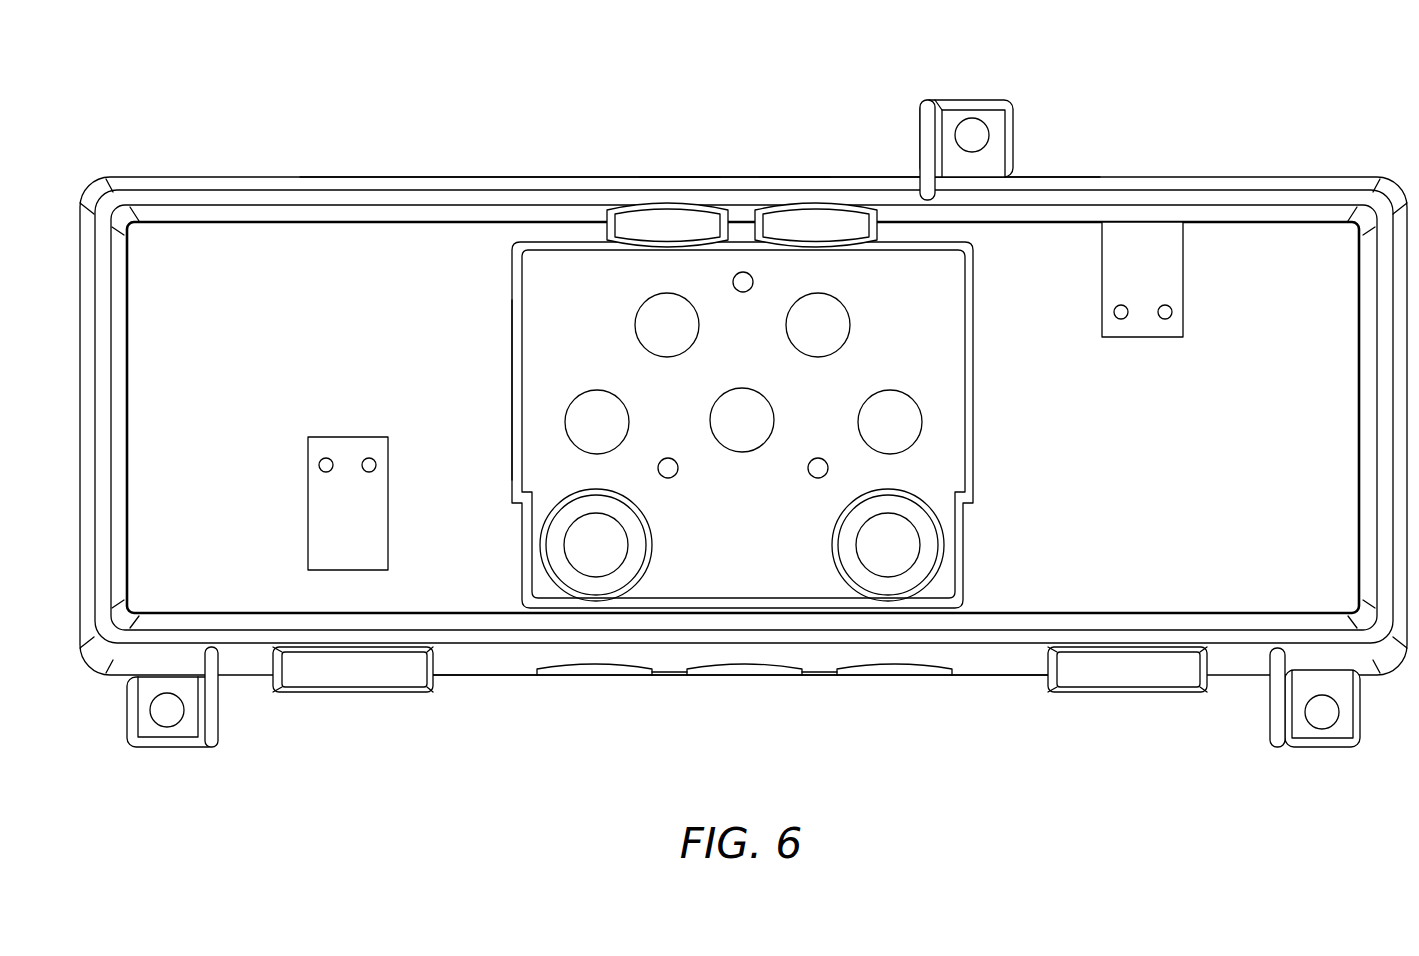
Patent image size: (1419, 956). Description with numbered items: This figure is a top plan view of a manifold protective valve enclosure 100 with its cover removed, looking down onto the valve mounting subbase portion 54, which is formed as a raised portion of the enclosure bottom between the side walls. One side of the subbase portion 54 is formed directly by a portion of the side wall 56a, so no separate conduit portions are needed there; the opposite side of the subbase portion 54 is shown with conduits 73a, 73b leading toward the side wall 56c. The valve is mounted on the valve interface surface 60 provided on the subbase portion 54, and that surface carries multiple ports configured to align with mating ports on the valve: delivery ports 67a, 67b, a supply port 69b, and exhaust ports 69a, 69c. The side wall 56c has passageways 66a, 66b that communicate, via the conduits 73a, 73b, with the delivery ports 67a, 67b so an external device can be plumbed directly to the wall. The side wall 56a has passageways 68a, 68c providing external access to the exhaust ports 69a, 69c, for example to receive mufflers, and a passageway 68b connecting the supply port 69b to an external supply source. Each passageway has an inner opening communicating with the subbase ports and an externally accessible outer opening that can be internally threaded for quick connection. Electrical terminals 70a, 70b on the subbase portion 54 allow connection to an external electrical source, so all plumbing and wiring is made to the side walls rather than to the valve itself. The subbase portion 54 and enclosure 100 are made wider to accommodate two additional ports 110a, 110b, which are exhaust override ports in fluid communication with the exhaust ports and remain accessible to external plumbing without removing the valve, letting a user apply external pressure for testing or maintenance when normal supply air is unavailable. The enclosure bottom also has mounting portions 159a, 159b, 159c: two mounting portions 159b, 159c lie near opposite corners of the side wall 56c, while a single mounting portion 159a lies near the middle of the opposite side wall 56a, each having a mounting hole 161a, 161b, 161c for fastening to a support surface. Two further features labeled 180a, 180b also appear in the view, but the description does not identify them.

The manifold protective valve enclosure 100 is at (748, 77).
The valve mounting subbase portion 54 is at (980, 455).
The side wall 56a is at (482, 676).
The side wall 56c is at (1245, 177).
The valve interface surface 60 is at (553, 470).
The passageway 66a is at (701, 177).
The passageway 66b is at (783, 177).
The delivery port 67a is at (660, 323).
The delivery port 67b is at (825, 322).
The passageway 68a is at (888, 668).
The passageway 68b is at (737, 668).
The passageway 68c is at (592, 668).
The exhaust port 69a is at (870, 420).
The supply port 69b is at (740, 430).
The exhaust port 69c is at (595, 418).
The electrical terminal 70a is at (1183, 305).
The electrical terminal 70b is at (308, 512).
The conduit portion 73a is at (640, 227).
The conduit portion 73b is at (826, 228).
The exhaust override port 110a is at (905, 548).
The boss opening 110b is at (576, 548).
The mounting portion 159a is at (965, 100).
The mounting portion 159b is at (173, 748).
The mounting portion 159c is at (1316, 748).
The mounting hole 161a is at (972, 137).
The mounting hole 161b is at (162, 718).
The mounting hole 161c is at (1327, 717).
The foot 180a is at (1122, 680).
The foot 180b is at (350, 677).